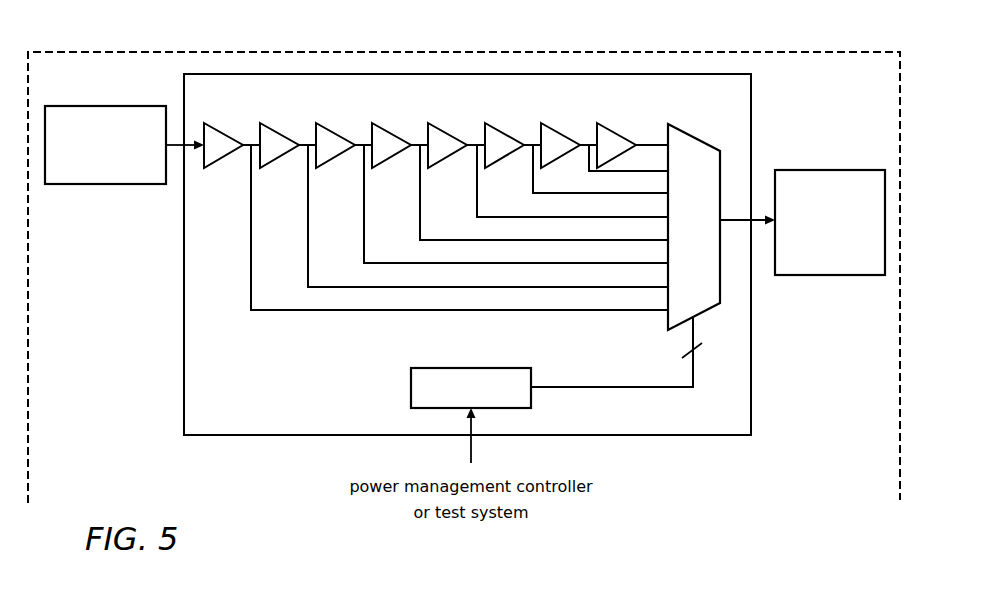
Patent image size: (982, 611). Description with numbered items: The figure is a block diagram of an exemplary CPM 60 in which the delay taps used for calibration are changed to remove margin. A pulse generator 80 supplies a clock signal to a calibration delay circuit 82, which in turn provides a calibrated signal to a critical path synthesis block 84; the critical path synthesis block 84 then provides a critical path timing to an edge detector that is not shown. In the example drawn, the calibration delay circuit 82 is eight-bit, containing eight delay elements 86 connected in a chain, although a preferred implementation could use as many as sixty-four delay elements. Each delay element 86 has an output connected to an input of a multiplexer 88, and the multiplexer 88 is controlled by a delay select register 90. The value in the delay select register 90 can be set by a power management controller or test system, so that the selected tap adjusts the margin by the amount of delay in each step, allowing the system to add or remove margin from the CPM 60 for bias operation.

The CPM 60 is at (163, 51).
The pulse generator 80 is at (72, 184).
The calibration delay circuit 82 is at (751, 155).
The critical path synthesis block 84 is at (830, 275).
The delay elements 86 is at (212, 123).
The multiplexer 88 is at (675, 128).
The delay select register 90 is at (411, 375).